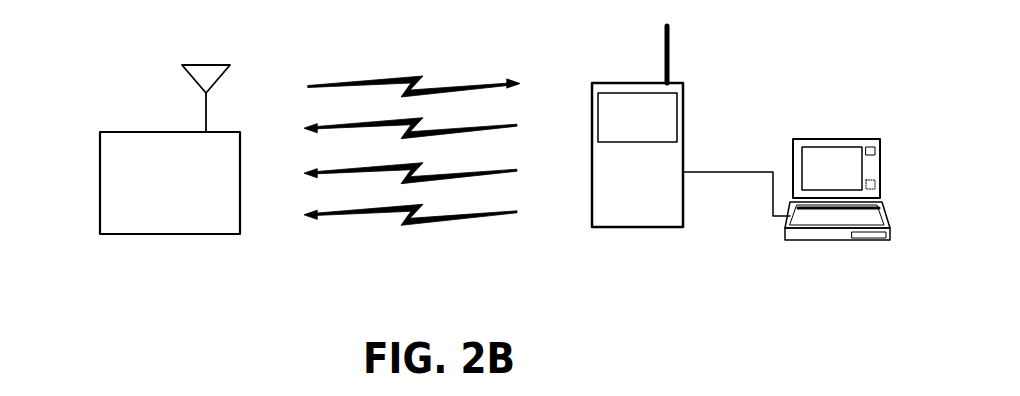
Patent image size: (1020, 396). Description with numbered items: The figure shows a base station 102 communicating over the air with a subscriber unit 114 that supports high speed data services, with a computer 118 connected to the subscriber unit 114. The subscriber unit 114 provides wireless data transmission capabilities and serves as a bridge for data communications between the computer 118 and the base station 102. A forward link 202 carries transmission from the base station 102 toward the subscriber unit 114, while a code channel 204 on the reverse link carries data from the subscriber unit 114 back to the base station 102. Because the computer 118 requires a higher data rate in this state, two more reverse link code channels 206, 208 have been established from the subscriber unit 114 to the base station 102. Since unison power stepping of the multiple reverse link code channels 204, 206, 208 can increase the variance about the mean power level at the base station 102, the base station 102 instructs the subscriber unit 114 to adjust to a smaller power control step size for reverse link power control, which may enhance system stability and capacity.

The base station 102 is at (100, 174).
The forward link 202 is at (442, 88).
The reverse link code channel 204 is at (445, 128).
The reverse link code channel 206 is at (445, 172).
The reverse link code channel 208 is at (445, 215).
The subscriber unit 114 is at (684, 92).
The computer 118 is at (858, 138).